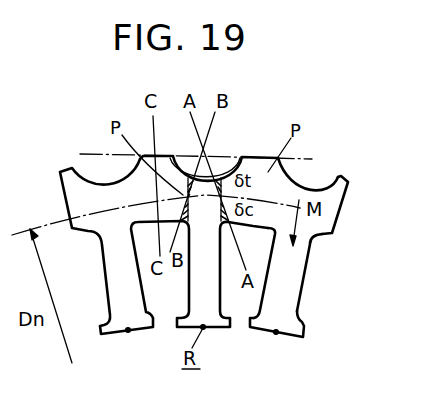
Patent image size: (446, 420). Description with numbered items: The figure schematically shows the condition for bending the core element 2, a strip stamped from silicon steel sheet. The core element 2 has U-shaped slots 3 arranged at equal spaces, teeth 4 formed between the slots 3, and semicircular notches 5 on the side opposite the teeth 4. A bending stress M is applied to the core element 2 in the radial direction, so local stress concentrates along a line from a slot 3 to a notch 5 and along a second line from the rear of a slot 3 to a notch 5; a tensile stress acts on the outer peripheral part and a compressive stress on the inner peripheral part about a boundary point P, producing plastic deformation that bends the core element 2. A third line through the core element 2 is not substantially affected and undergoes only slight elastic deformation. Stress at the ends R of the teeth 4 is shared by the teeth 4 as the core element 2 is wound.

The core element 2 is at (219, 253).
The U-shaped slot 3 is at (262, 312).
The tooth 4 is at (285, 294).
The semicircular notch 5 is at (311, 188).